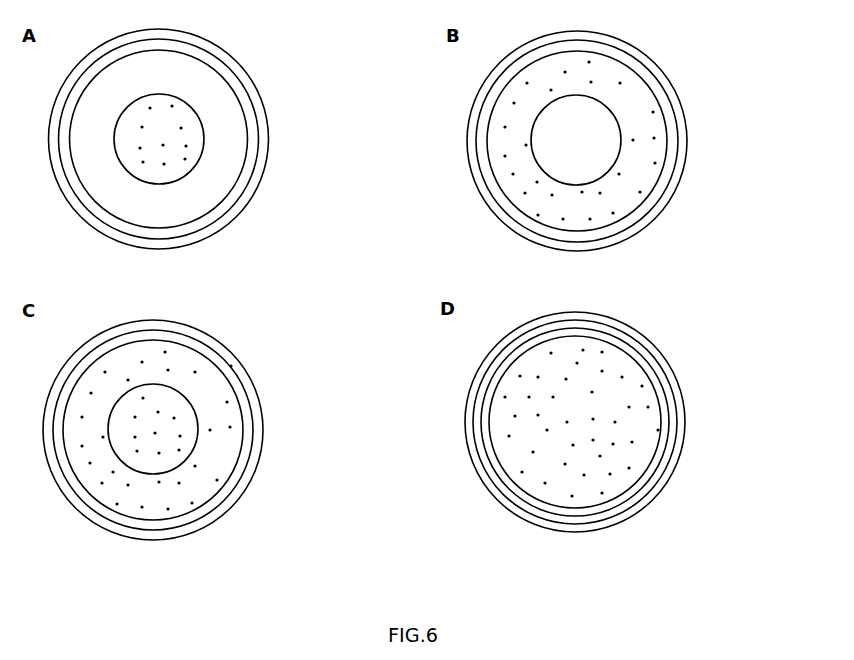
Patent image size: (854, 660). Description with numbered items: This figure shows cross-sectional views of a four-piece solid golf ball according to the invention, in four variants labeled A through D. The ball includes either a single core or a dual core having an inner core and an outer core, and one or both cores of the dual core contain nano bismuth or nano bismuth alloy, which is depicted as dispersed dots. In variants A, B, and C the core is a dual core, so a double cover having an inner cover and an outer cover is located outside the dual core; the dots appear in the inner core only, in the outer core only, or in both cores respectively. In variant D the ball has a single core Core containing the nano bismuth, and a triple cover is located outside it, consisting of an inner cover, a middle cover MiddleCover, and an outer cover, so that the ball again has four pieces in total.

The single core Core is at (599, 428).
The middle cover MiddleCover is at (644, 493).